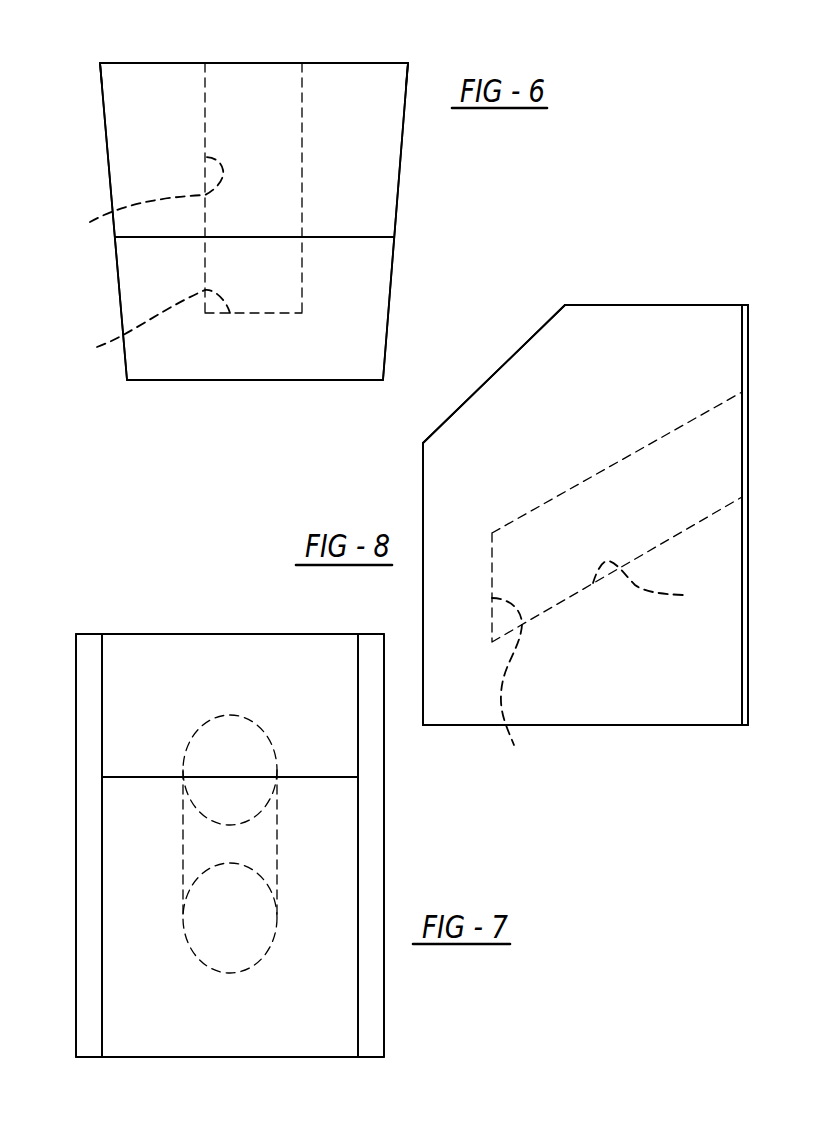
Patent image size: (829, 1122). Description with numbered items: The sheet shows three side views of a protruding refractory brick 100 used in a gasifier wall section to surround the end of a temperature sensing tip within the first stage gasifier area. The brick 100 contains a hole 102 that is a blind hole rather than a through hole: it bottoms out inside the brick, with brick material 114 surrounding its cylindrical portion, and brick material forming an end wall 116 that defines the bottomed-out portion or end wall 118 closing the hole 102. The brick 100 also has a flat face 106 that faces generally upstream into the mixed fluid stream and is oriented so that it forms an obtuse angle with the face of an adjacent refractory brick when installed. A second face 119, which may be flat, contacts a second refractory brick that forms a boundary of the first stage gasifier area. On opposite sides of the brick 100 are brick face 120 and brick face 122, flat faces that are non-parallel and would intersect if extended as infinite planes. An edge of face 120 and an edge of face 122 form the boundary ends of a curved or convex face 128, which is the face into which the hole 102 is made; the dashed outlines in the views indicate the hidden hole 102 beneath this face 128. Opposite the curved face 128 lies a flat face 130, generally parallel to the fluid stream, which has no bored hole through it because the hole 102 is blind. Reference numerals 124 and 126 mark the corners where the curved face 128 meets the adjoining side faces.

In FIG. 6, the protruding refractory brick 100 is at (101, 86).
In FIG. 8, the protruding refractory brick 100 is at (607, 305).
In FIG. 7, the protruding refractory brick 100 is at (258, 634).
In FIG. 6, the hole 102 is at (140, 199).
In FIG. 8, the hole 102 is at (655, 584).
In FIG. 7, the hole 102 is at (277, 853).
In FIG. 6, the flat face 106 is at (347, 309).
In FIG. 8, the flat face 106 is at (494, 375).
In FIG. 7, the flat face 106 is at (155, 701).
In FIG. 6, the brick material 114 is at (253, 132).
In FIG. 6, the end wall 116 is at (253, 211).
In FIG. 6, the bottomed-out portion 118 is at (148, 328).
In FIG. 8, the bottomed-out portion 118 is at (512, 687).
In FIG. 7, the bottomed-out portion 118 is at (230, 918).
In FIG. 6, the second face 119 is at (351, 175).
In FIG. 8, the second face 119 is at (679, 305).
In FIG. 6, the brick face 120 is at (106, 137).
In FIG. 8, the brick face 120 is at (614, 725).
In FIG. 7, the brick face 120 is at (80, 910).
In FIG. 6, the brick face 122 is at (400, 168).
In FIG. 8, the brick face 122 is at (617, 507).
In FIG. 7, the brick face 122 is at (362, 873).
In FIG. 6, the top left corner 124 is at (100, 63).
In FIG. 6, the top right corner 126 is at (408, 63).
In FIG. 8, the top right corner 126 is at (748, 697).
In FIG. 6, the curved face 128 is at (258, 62).
In FIG. 8, the curved face 128 is at (748, 348).
In FIG. 6, the flat face 130 is at (277, 380).
In FIG. 8, the flat face 130 is at (425, 478).
In FIG. 7, the flat face 130 is at (304, 994).